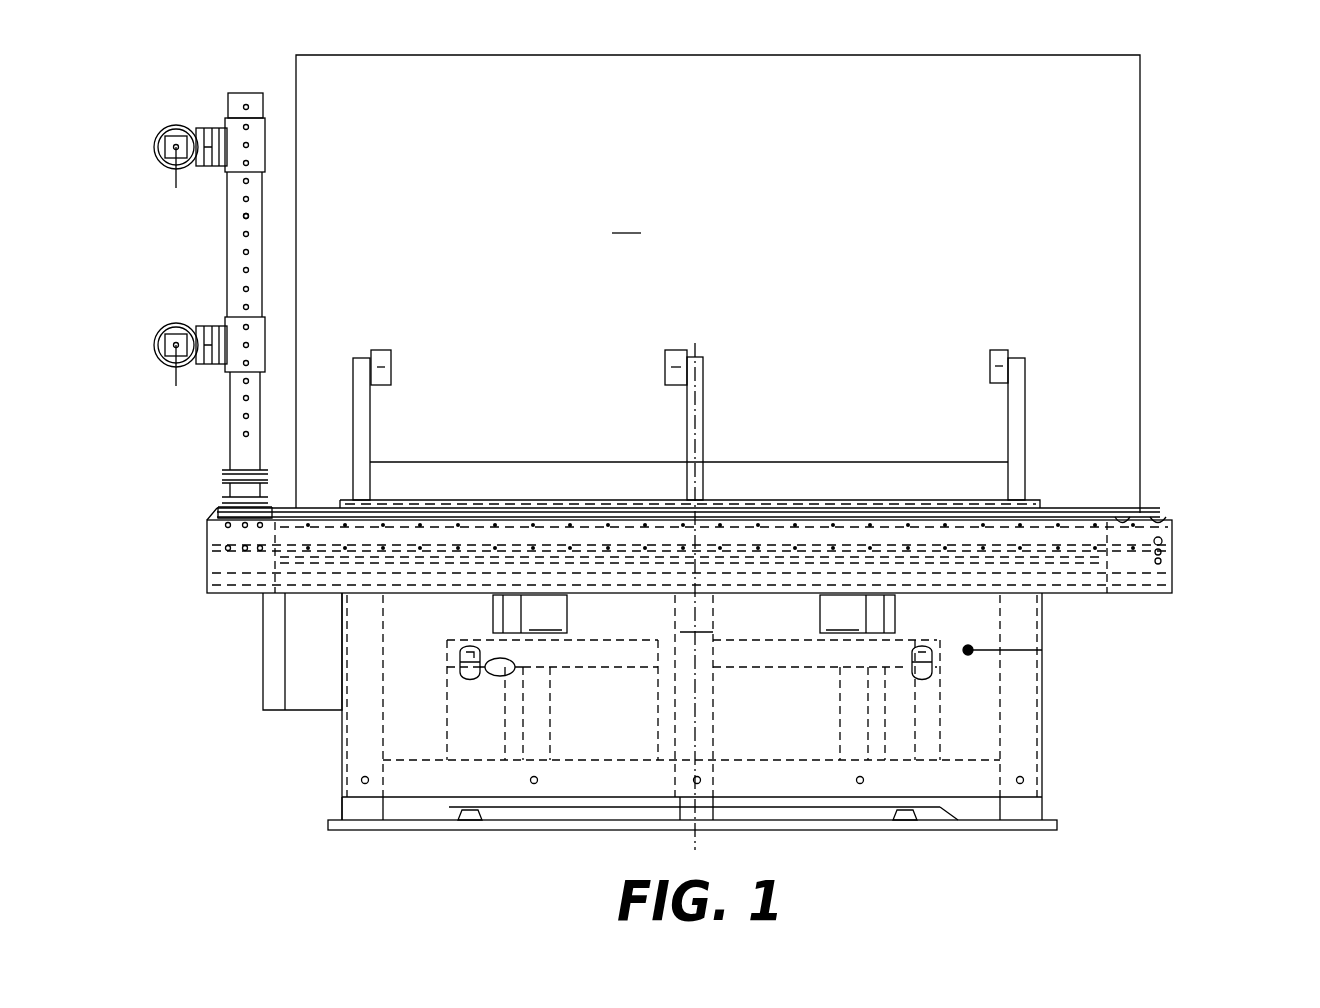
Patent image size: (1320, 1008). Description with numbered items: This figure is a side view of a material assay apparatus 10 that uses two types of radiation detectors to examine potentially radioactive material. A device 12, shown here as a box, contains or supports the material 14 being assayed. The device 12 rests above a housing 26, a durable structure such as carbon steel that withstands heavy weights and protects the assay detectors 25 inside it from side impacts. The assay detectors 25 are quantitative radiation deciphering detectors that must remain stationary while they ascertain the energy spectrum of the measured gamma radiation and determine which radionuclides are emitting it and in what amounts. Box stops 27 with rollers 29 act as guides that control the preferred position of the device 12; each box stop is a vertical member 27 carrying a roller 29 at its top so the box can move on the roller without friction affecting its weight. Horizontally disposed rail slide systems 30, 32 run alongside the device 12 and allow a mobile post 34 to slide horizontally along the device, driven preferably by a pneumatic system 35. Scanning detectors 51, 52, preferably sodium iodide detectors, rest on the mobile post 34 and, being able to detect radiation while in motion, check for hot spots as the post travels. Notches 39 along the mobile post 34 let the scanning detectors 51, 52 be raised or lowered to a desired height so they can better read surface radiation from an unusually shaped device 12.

The material assay apparatus 10 is at (1263, 114).
The device 12 is at (1143, 285).
The material 14 is at (628, 219).
The assay detectors 25 is at (694, 614).
The housing 26 is at (1046, 702).
The box stops 27 is at (375, 410).
The rollers 29 is at (388, 360).
The rail slide system 30 is at (236, 598).
The rail slide system 32 is at (307, 505).
The mobile post 34 is at (222, 253).
The pneumatic system 35 is at (262, 696).
The notches 39 is at (253, 216).
The scanning detector 51 is at (156, 352).
The scanning detector 52 is at (156, 152).